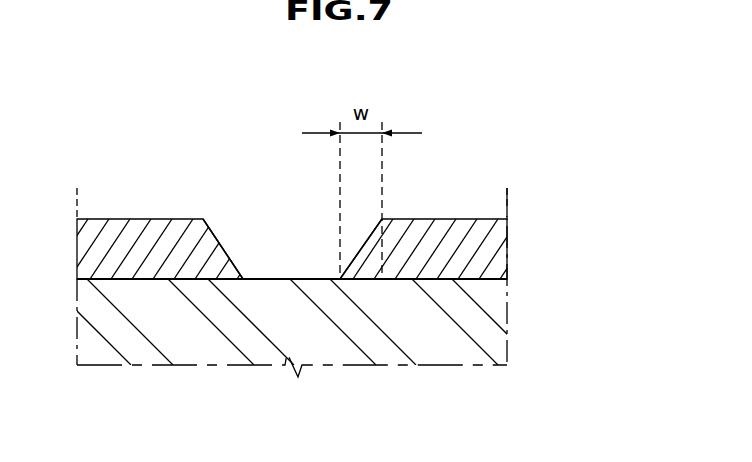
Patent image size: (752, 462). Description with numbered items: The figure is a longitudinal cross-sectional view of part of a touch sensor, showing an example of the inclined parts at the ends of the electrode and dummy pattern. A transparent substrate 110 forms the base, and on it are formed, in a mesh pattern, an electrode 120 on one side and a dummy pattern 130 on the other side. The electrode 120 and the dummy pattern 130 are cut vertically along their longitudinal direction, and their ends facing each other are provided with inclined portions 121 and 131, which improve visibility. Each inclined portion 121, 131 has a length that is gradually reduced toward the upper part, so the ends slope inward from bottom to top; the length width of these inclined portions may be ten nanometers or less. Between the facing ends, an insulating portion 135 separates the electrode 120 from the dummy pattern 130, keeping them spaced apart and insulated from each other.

The transparent substrate 110 is at (482, 318).
The electrode 120 is at (150, 208).
The inclined portion 121 is at (228, 253).
The dummy pattern 130 is at (463, 204).
The inclined portion 131 is at (364, 239).
The insulating portion 135 is at (318, 259).